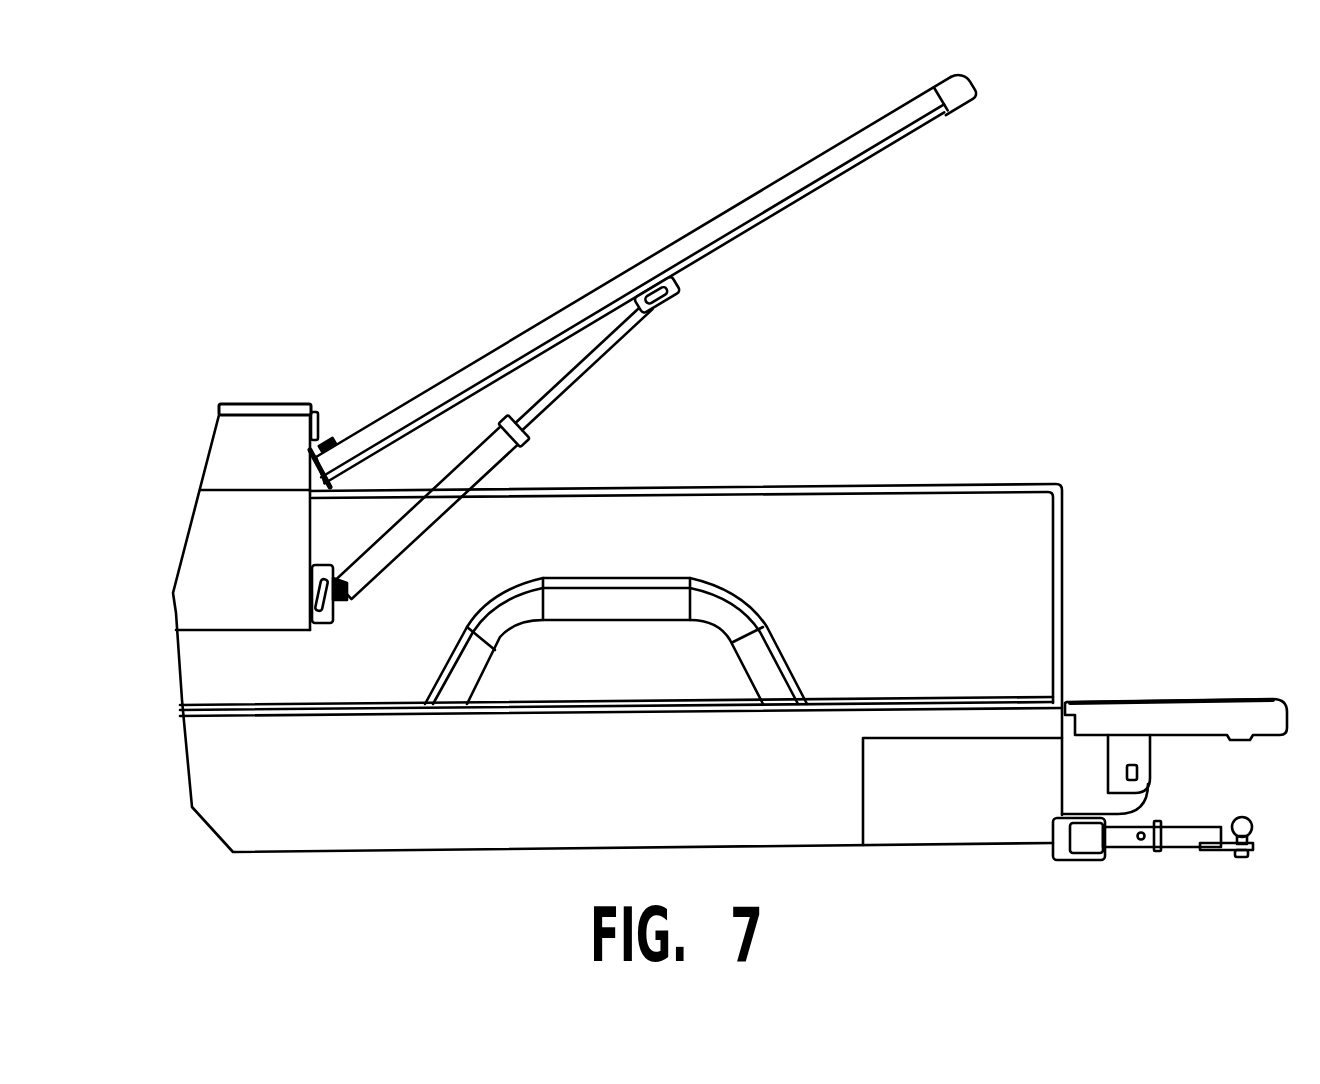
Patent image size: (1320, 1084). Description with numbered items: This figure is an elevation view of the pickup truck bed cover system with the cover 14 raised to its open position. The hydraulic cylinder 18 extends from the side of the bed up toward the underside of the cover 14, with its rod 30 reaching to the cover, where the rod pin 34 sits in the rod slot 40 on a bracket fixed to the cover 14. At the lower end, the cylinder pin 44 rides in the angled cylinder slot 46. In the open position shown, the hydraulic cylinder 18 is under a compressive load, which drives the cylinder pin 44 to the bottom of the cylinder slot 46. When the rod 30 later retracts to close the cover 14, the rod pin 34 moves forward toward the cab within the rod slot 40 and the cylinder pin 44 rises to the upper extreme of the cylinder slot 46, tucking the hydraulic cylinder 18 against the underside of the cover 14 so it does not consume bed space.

The cover 14 is at (670, 250).
The hydraulic cylinder 18 is at (508, 454).
The rod 30 is at (588, 373).
The rod pin 34 is at (669, 304).
The rod slot 40 is at (679, 289).
The cylinder pin 44 is at (328, 627).
The cylinder slot 46 is at (312, 556).